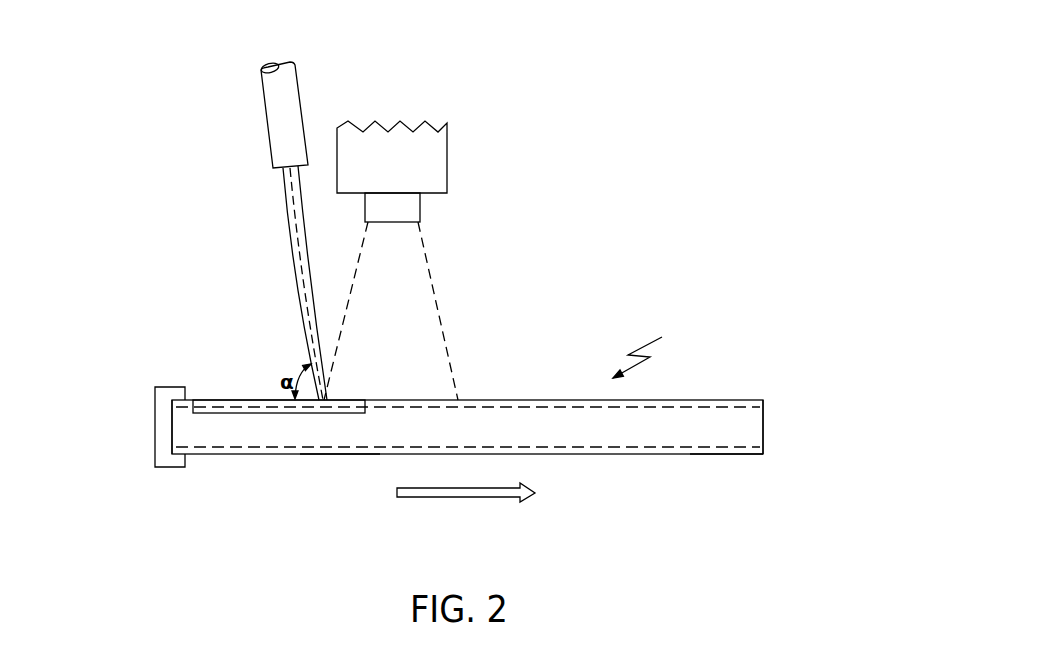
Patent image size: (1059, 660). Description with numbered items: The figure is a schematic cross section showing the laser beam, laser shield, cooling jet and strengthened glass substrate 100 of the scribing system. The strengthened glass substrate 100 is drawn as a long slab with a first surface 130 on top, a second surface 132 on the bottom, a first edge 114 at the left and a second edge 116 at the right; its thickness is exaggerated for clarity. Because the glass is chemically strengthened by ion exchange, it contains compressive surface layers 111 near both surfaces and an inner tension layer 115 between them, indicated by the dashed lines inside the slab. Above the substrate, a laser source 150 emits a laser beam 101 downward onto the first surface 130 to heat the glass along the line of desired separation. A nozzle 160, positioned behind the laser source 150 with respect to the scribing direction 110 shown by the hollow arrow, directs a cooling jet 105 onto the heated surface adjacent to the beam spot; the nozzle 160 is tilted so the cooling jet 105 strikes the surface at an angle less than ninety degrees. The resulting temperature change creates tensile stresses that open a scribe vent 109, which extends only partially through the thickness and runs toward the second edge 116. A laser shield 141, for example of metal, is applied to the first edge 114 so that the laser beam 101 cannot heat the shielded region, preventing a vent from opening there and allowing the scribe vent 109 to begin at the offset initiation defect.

The strengthened glass substrate 100 is at (658, 349).
The laser beam 101 is at (431, 280).
The cooling jet 105 is at (294, 250).
The scribe vent 109 is at (267, 415).
The scribing direction 110 is at (465, 497).
The compressive surface layers 111 is at (578, 407).
The first edge 114 is at (172, 428).
The inner tension layer 115 is at (722, 437).
The second edge 116 is at (765, 427).
The first surface 130 is at (728, 400).
The second surface 132 is at (332, 455).
The laser shield 141 is at (168, 387).
The laser source 150 is at (448, 178).
The nozzle 160 is at (268, 123).